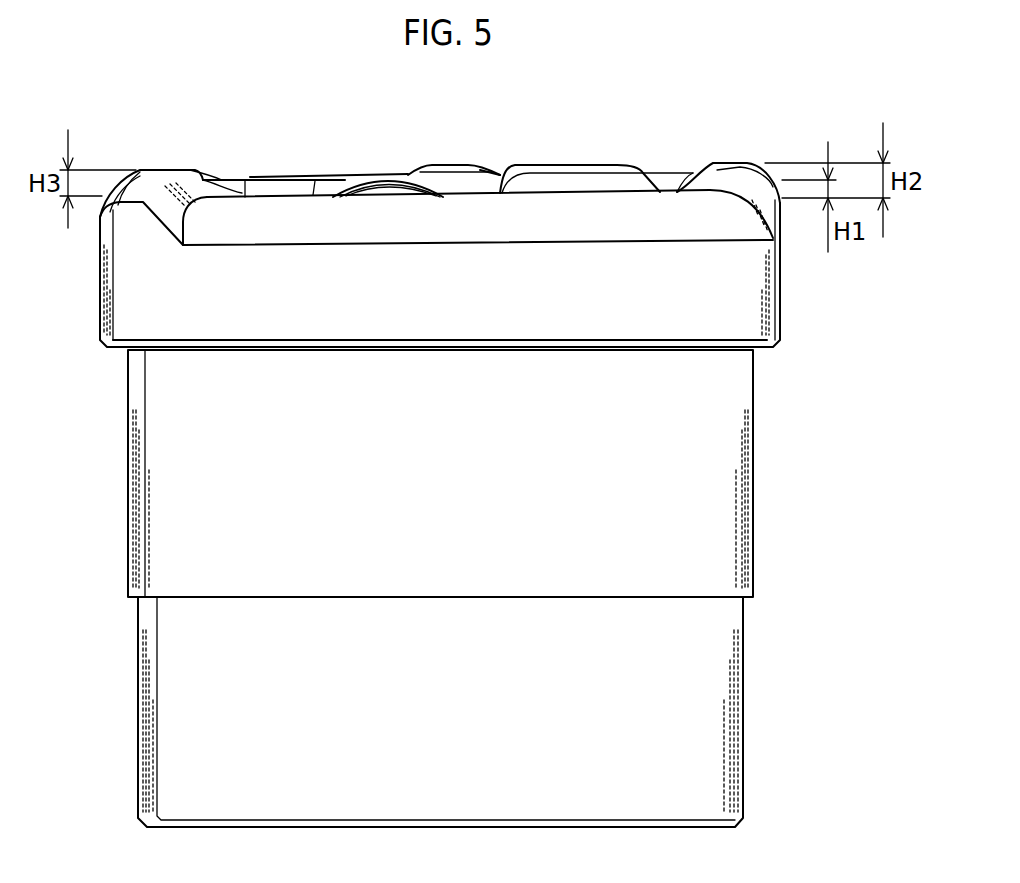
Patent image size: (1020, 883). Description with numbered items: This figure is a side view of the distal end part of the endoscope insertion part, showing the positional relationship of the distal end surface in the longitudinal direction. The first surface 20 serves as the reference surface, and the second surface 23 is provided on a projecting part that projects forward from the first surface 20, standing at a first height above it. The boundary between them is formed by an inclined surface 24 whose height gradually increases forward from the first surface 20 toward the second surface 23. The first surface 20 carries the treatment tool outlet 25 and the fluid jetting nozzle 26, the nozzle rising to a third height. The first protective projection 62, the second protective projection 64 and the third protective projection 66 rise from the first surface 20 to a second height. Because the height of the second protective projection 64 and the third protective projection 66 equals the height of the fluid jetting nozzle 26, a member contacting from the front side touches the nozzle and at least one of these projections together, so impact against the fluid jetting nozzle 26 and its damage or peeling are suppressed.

The first surface 20 is at (313, 193).
The second surface 23 is at (266, 180).
The inclined surface 24 is at (247, 193).
The treatment tool outlet 25 is at (387, 183).
The fluid jetting nozzle 26 is at (565, 168).
The first protective projection 62 is at (453, 168).
The second protective projection 64 is at (150, 173).
The third protective projection 66 is at (738, 172).